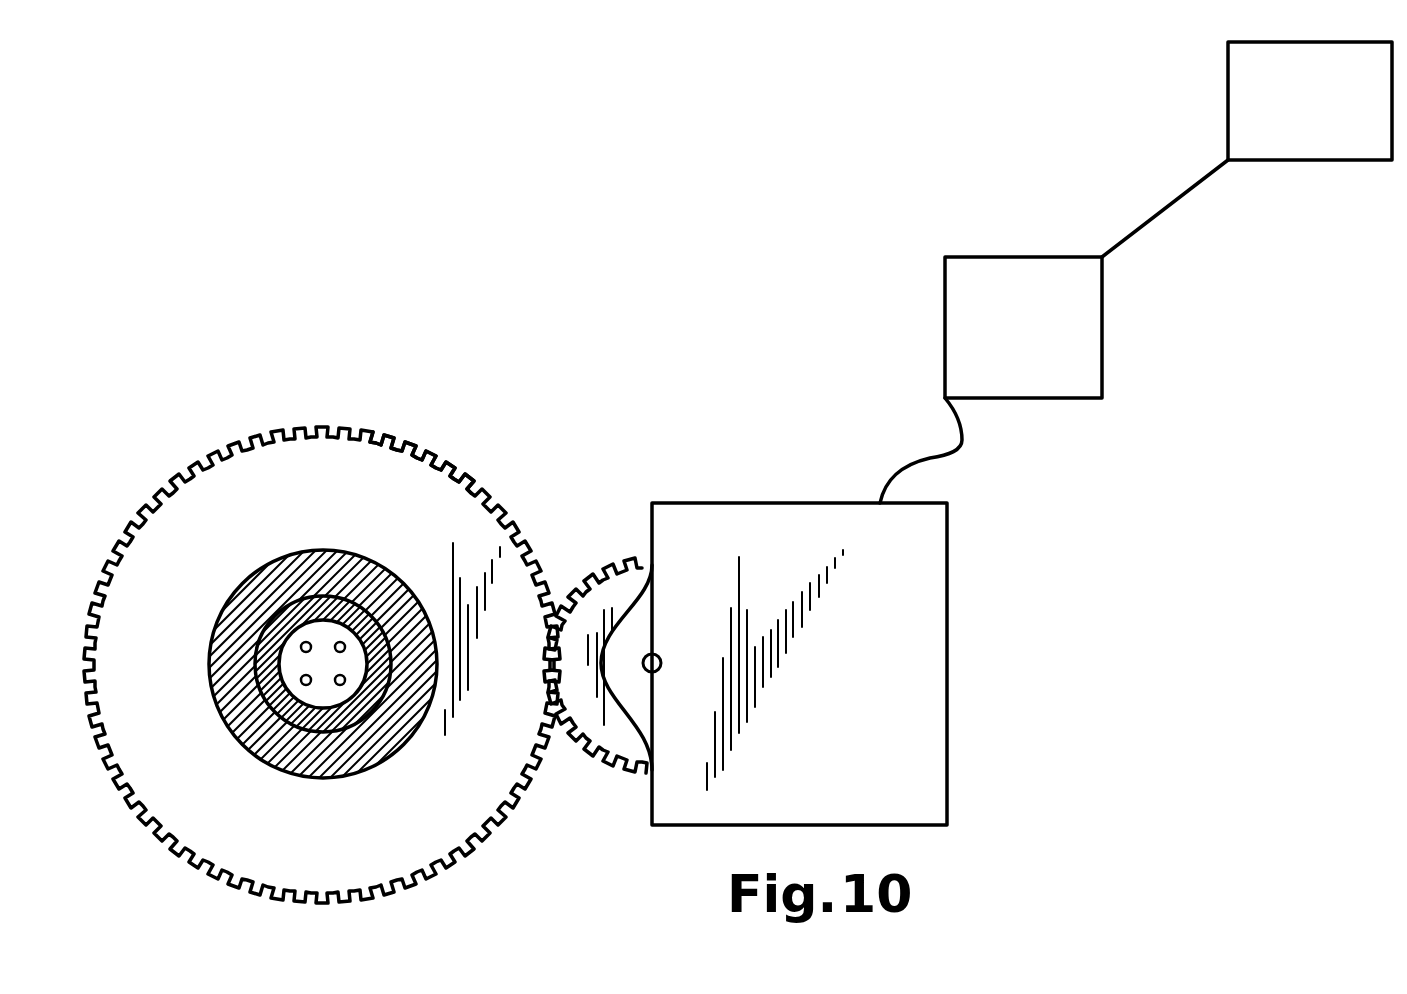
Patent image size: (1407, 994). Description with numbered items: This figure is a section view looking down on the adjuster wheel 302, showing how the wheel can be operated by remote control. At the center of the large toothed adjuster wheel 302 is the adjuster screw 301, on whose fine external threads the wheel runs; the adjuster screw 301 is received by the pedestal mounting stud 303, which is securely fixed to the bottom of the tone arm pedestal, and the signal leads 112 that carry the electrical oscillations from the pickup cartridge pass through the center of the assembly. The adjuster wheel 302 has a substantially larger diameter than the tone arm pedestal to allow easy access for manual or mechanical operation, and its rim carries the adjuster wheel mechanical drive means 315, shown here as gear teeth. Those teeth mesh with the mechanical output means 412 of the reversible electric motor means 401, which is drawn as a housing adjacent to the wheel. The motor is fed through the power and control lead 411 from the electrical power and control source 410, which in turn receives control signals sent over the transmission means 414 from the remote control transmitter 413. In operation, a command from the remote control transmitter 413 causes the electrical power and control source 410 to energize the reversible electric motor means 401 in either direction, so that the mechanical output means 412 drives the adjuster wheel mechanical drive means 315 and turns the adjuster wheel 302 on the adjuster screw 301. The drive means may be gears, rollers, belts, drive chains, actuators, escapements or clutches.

The signal leads 112 is at (341, 688).
The adjuster screw 301 is at (243, 603).
The adjuster wheel 302 is at (325, 483).
The pedestal mounting stud 303 is at (282, 703).
The adjuster wheel mechanical drive means 315 is at (408, 442).
The reversible electric motor means 401 is at (785, 533).
The electrical power and control source 410 is at (950, 328).
The power and control lead 411 is at (961, 452).
The mechanical output means 412 is at (592, 627).
The remote control transmitter 413 is at (1310, 101).
The transmission means 414 is at (1155, 210).